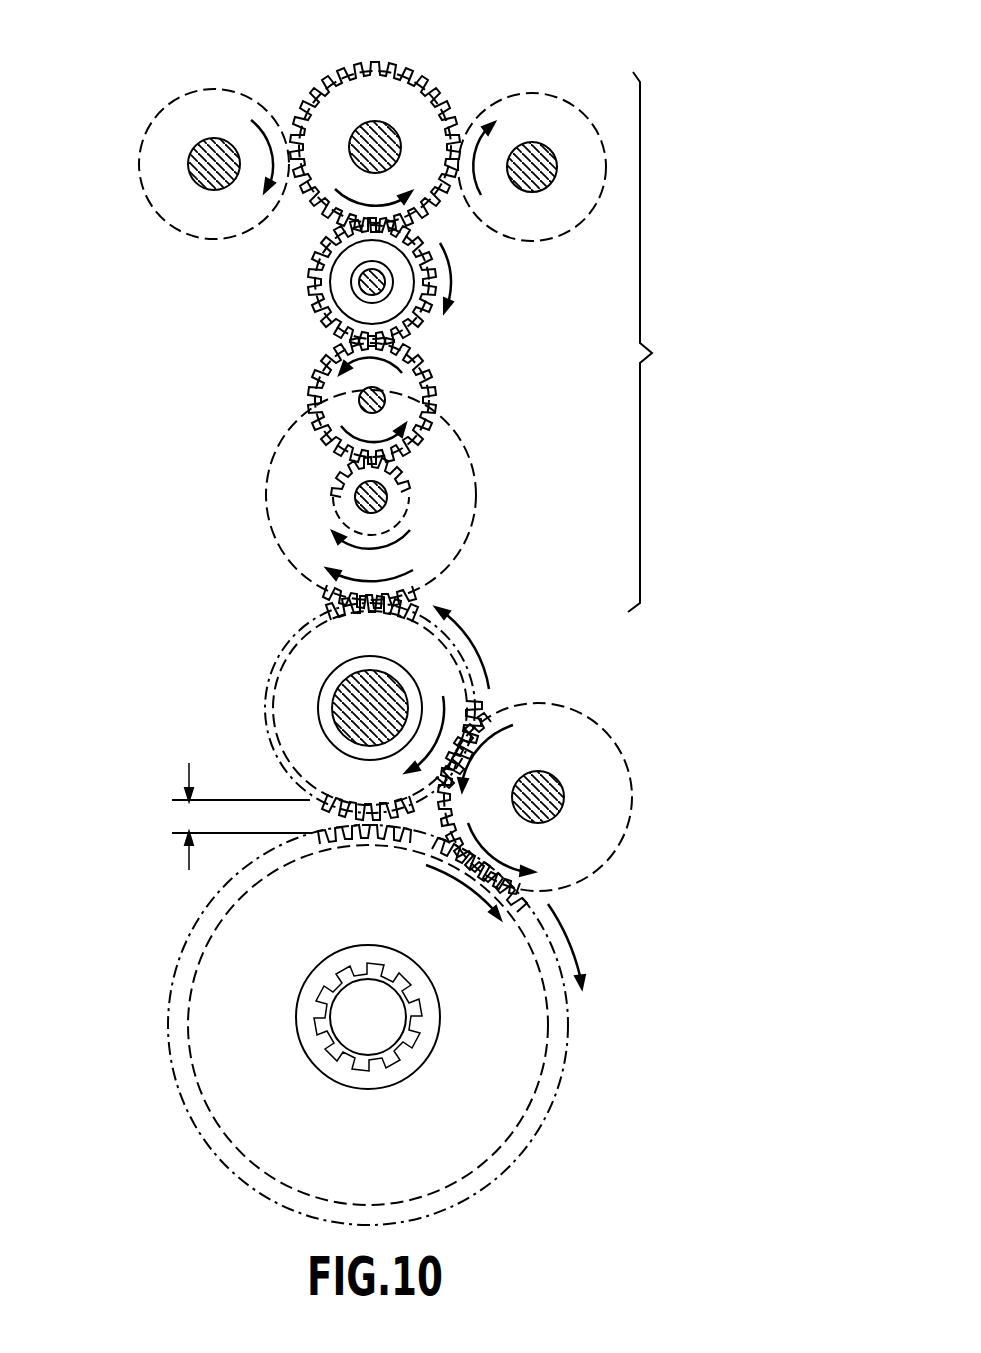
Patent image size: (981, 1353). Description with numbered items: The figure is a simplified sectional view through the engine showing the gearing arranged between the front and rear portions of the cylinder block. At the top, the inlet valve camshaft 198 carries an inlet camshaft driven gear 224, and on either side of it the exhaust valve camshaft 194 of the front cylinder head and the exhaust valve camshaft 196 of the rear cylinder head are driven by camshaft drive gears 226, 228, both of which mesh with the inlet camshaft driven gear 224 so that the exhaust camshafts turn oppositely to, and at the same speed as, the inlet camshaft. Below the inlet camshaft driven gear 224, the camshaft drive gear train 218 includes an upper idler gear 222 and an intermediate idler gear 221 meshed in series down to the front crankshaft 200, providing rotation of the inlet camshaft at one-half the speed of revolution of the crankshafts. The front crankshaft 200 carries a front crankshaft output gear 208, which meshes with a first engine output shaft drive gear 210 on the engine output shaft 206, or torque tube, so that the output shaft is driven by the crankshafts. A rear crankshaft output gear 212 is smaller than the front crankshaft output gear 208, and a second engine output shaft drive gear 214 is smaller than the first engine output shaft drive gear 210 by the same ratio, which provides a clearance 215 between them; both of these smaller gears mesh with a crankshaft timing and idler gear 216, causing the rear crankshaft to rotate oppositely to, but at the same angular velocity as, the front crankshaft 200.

The exhaust valve camshaft 194 is at (540, 145).
The exhaust valve camshaft 196 is at (216, 138).
The inlet valve camshaft 198 is at (372, 122).
The front crankshaft 200 is at (477, 478).
The engine output shaft 206 is at (385, 962).
The front crankshaft output gear 208 is at (281, 653).
The first engine output shaft drive gear 210 is at (566, 1078).
The rear crankshaft output gear 212 is at (275, 737).
The second engine output shaft drive gear 214 is at (186, 1048).
The clearance 215 is at (183, 815).
The crankshaft timing and idler gear 216 is at (633, 778).
The camshaft drive gear train 218 is at (670, 342).
The intermediate idler gear 221 is at (428, 390).
The upper idler gear 222 is at (318, 312).
The inlet camshaft driven gear 224 is at (398, 72).
The camshaft drive gear 226 is at (527, 243).
The camshaft drive gear 228 is at (172, 232).